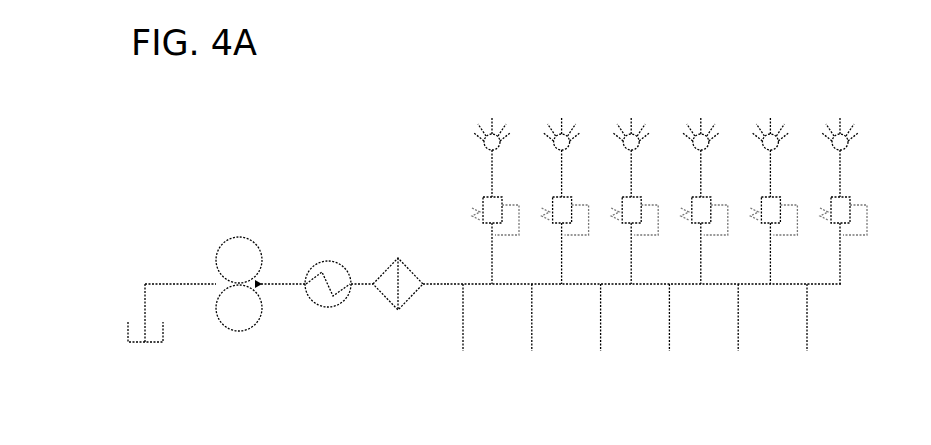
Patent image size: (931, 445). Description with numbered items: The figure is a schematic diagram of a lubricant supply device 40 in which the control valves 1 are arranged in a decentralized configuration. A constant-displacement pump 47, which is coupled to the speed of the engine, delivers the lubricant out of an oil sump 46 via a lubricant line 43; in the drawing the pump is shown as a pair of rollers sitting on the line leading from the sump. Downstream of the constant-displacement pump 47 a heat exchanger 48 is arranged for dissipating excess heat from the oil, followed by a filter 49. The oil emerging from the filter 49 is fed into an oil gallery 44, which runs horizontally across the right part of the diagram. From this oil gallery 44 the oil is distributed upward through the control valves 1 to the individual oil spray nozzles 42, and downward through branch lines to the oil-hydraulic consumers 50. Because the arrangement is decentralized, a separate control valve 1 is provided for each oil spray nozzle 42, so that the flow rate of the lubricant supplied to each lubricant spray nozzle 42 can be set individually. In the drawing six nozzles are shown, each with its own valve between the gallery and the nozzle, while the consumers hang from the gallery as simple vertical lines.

The lubricant supply device 40 is at (183, 129).
The oil spray nozzle 42 is at (484, 146).
The control valve 1 is at (482, 204).
The lubricant line 43 is at (447, 286).
The oil gallery 44 is at (819, 300).
The oil sump 46 is at (155, 345).
The constant-displacement pump 47 is at (237, 236).
The heat exchanger 48 is at (323, 258).
The filter 49 is at (390, 260).
The oil-hydraulic consumer 50 is at (463, 332).